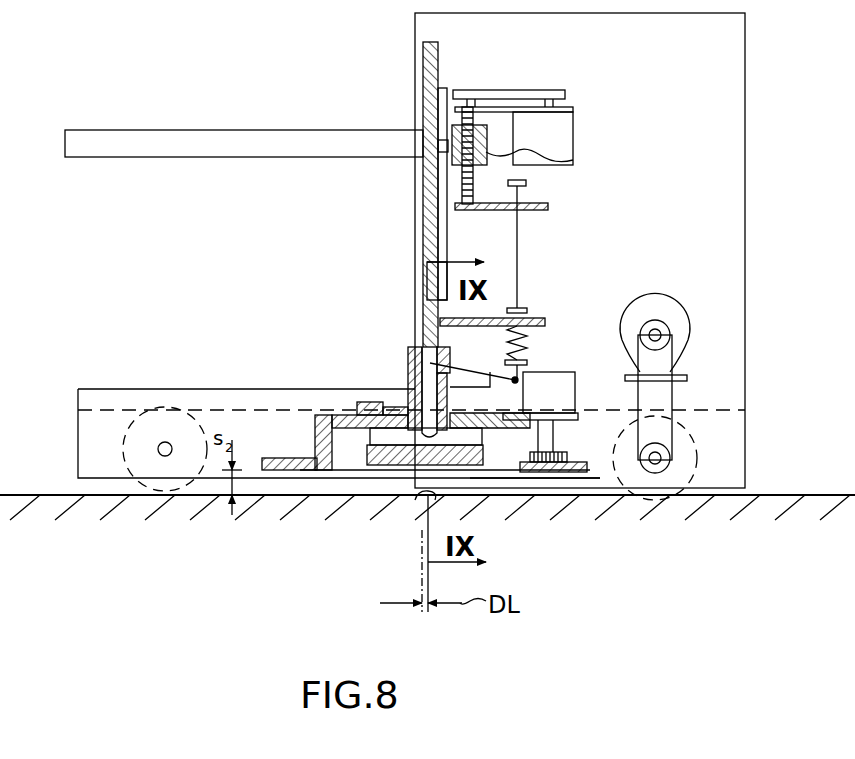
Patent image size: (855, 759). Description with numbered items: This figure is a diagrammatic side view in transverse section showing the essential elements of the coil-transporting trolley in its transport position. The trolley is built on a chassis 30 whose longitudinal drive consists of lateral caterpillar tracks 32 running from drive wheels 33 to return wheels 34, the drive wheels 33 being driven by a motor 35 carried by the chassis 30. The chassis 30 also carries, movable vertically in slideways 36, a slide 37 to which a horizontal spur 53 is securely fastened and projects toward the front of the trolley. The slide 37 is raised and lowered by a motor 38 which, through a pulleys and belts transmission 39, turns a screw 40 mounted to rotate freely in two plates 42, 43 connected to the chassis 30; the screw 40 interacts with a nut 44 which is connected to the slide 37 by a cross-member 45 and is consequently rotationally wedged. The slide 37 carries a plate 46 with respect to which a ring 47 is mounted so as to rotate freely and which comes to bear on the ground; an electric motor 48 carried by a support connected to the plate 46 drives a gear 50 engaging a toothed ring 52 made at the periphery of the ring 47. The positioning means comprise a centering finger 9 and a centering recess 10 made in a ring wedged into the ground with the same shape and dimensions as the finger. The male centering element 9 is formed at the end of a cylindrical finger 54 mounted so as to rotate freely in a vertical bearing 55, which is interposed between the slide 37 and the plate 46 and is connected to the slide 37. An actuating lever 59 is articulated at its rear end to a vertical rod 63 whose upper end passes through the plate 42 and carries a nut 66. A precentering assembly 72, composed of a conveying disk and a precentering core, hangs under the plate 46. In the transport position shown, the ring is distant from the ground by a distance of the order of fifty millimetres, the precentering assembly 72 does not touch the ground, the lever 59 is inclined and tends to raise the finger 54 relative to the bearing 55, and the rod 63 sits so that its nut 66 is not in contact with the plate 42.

The centering finger 9 is at (430, 425).
The centering recess 10 is at (470, 470).
The chassis 30 is at (723, 86).
The lateral caterpillar tracks 32 is at (158, 410).
The drive wheels 33 is at (700, 440).
The return wheels 34 is at (135, 440).
The motor 35 is at (678, 305).
The slideways 36 is at (424, 104).
The slide 37 is at (437, 52).
The motor 38 is at (568, 135).
The pulleys and belts transmission 39 is at (520, 88).
The screw 40 is at (462, 180).
The plate 42 is at (483, 210).
The plate 43 is at (575, 105).
The nut 44 is at (487, 155).
The cross-member 45 is at (445, 147).
The plate 46 is at (332, 415).
The ring 47 is at (590, 480).
The electric motor 48 is at (552, 380).
The gear 50 is at (565, 455).
The toothed ring 52 is at (304, 450).
The horizontal spur 53 is at (240, 130).
The cylindrical finger 54 is at (372, 402).
The vertical bearing 55 is at (428, 358).
The actuating lever 59 is at (462, 387).
The vertical rod 63 is at (517, 260).
The nut 66 is at (526, 183).
The precentering assembly 72 is at (380, 470).